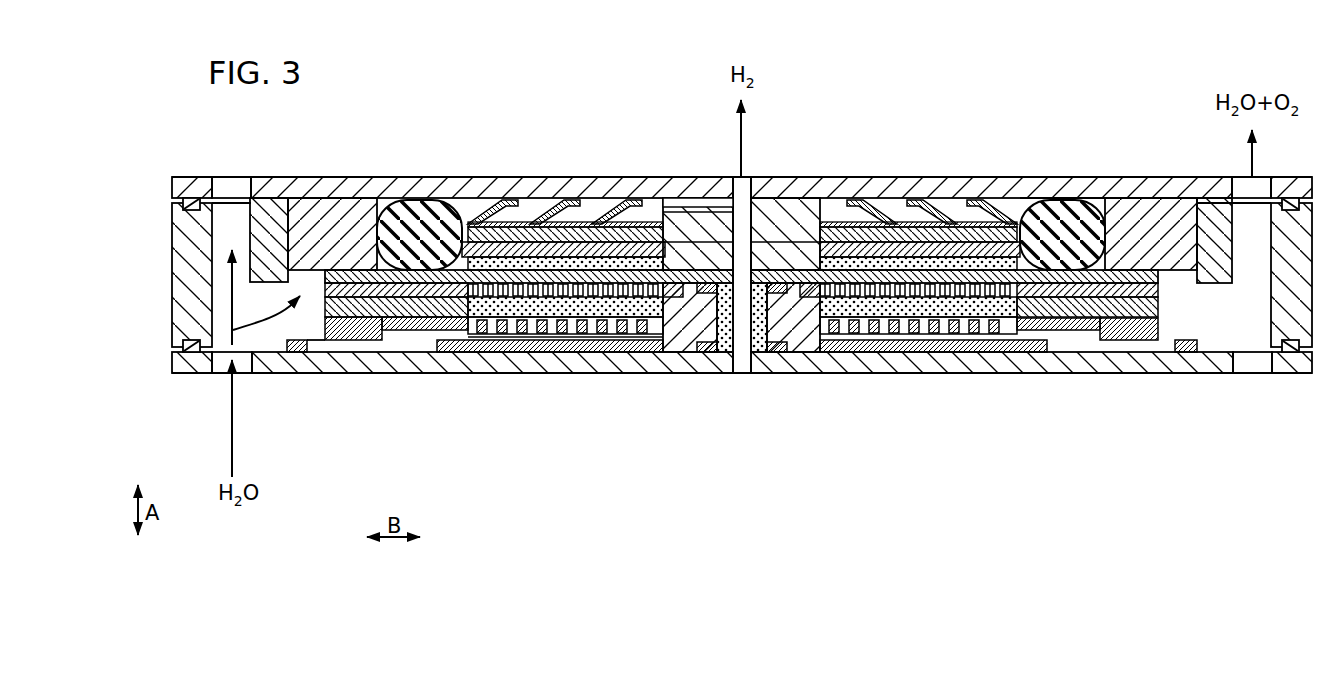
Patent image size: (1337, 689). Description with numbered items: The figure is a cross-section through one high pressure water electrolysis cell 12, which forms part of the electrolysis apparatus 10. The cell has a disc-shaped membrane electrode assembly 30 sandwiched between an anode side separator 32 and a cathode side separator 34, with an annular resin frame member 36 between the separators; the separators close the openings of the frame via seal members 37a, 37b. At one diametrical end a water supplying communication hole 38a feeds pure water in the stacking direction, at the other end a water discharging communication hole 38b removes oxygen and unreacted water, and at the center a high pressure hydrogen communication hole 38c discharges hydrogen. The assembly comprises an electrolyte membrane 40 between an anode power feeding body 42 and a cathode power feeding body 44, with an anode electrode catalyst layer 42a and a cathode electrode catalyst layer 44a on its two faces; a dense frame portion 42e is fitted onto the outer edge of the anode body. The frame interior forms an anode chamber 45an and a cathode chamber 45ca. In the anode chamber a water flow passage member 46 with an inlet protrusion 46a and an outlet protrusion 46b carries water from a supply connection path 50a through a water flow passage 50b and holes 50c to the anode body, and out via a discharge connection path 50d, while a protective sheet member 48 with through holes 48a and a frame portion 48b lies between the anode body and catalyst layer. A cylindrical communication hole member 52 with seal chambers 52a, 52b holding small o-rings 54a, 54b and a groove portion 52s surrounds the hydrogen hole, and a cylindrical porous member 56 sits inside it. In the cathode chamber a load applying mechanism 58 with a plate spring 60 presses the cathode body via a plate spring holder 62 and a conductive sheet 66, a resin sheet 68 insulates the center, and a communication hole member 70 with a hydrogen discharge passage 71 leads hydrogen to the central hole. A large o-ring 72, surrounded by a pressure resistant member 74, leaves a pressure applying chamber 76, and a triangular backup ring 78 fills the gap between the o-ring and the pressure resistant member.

The water electrolysis device 10 is at (1142, 67).
The high pressure water electrolysis cell 12 is at (1077, 67).
The membrane electrode assembly 30 is at (355, 268).
The anode side separator 32 is at (1288, 385).
The cathode side separator 34 is at (1288, 166).
The resin frame member 36 is at (160, 316).
The seal member 37a is at (192, 200).
The seal member 37b is at (195, 352).
The water supplying communication hole 38a is at (243, 368).
The water discharging communication hole 38b is at (1250, 365).
The high pressure hydrogen communication hole 38c is at (742, 362).
The electrolyte membrane 40 is at (1047, 196).
The anode power feeding body 42 is at (538, 300).
The anode electrode catalyst layer 42a is at (514, 322).
The frame portion 42e is at (427, 316).
The cathode power feeding body 44 is at (572, 232).
The cathode electrode catalyst layer 44a is at (523, 220).
The cathode chamber 45ca is at (603, 210).
The anode chamber 45an is at (313, 325).
The water flow passage member 46 is at (473, 363).
The inlet protrusion 46a is at (304, 346).
The outlet protrusion 46b is at (1188, 344).
The protective sheet member 48 is at (1082, 303).
The through holes 48a is at (998, 290).
The frame portion 48b is at (1116, 295).
The supply connection path 50a is at (370, 343).
The water flow passage 50b is at (572, 344).
The holes 50c is at (630, 334).
The discharge connection path 50d is at (1147, 344).
The communication hole member 52 is at (797, 368).
The seal chamber 52a is at (708, 285).
The seal chamber 52b is at (707, 352).
The groove portion 52s is at (683, 210).
The seal member 54a is at (712, 262).
The seal member 54b is at (690, 340).
The porous member 56 is at (761, 352).
The load applying mechanism 58 is at (942, 195).
The plate spring 60 is at (866, 207).
The plate spring holder 62 is at (899, 215).
The conductive sheet 66 is at (982, 215).
The resin sheet 68 is at (765, 230).
The communication hole member 70 is at (782, 215).
The hydrogen discharge passage 71 is at (689, 203).
The large o-ring 72 is at (1078, 222).
The pressure resistant member 74 is at (315, 210).
The pressure applying chamber 76 is at (1027, 262).
The backup ring 78 is at (1100, 210).